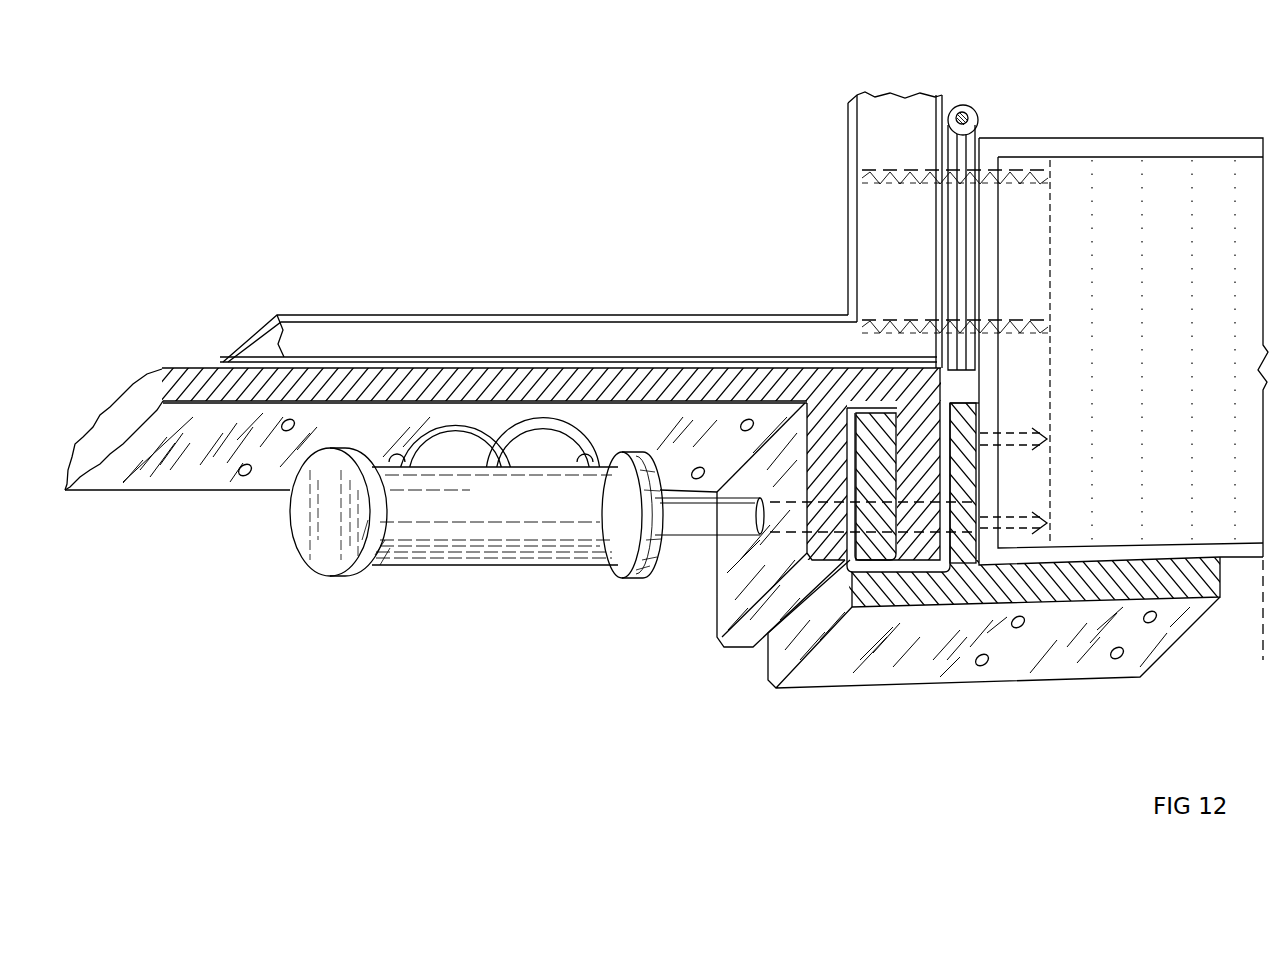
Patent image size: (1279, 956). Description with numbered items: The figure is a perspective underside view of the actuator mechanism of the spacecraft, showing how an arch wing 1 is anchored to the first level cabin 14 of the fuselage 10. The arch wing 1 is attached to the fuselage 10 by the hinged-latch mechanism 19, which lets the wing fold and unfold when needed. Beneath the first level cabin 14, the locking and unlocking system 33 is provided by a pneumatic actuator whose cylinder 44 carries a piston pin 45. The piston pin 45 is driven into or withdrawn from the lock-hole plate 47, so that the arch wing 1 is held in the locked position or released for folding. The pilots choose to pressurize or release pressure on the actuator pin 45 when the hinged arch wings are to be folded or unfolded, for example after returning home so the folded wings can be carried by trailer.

The arch wing 1 is at (1112, 155).
The fuselage 10 is at (867, 143).
The hinged-latch mechanism 19 is at (972, 107).
The first level cabin 14 is at (600, 232).
The pneumatic actuator cylinder 44 is at (442, 538).
The piston pin 45 is at (685, 563).
The lock-hole plate 47 is at (745, 597).
The locking and unlocking system 33 is at (935, 660).